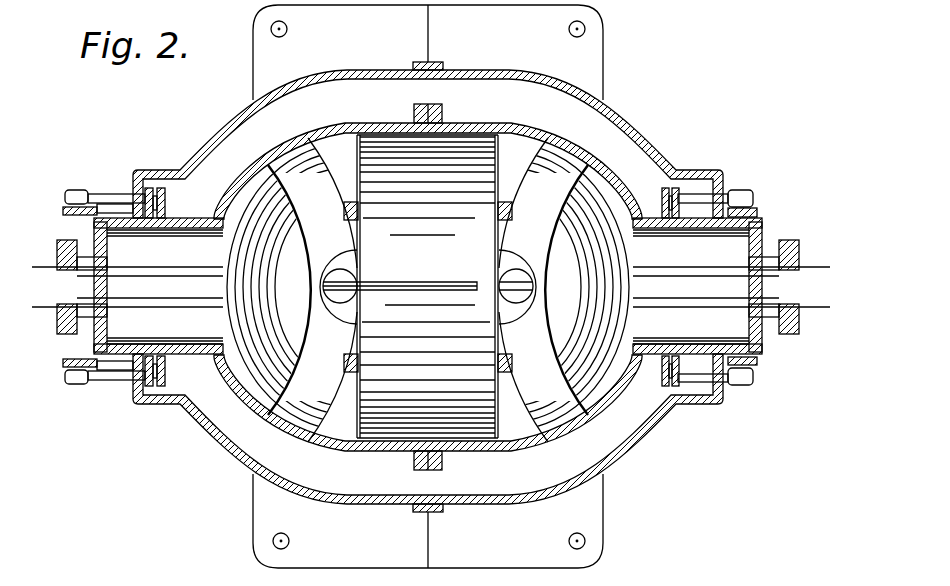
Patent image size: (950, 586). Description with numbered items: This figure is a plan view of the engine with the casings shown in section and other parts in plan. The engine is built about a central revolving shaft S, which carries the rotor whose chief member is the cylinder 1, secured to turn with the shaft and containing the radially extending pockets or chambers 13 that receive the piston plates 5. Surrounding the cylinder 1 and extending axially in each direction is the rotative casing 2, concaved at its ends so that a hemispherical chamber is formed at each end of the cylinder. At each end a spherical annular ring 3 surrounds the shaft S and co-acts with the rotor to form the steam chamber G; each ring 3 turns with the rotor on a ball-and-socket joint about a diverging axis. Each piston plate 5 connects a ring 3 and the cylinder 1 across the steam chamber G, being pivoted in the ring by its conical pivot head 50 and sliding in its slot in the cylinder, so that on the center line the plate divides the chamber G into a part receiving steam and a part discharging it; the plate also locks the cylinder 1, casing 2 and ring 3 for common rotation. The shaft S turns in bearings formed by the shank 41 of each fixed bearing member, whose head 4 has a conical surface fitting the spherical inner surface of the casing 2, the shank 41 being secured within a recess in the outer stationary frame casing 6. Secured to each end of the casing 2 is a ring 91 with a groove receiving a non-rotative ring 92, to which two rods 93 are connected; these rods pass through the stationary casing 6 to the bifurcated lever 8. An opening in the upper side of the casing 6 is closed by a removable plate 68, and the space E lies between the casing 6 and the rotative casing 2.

The cylinder 1 is at (427, 286).
The casing 2 is at (524, 128).
The ring 3 is at (428, 290).
The head 4 is at (280, 291).
The piston plate 5 is at (432, 285).
The frame casing 6 is at (637, 125).
The bifurcated lever 8 is at (63, 210).
The pockets or chambers 13 is at (396, 282).
The shank 41 is at (428, 286).
The conical pivot head 50 is at (340, 270).
The removable plate 68 is at (428, 286).
The ring 91 is at (166, 211).
The non-rotative ring 92 is at (158, 195).
The rods 93 is at (107, 197).
The air space between casing and frame E is at (330, 98).
The steam chamber G is at (431, 286).
The shaft S is at (811, 270).